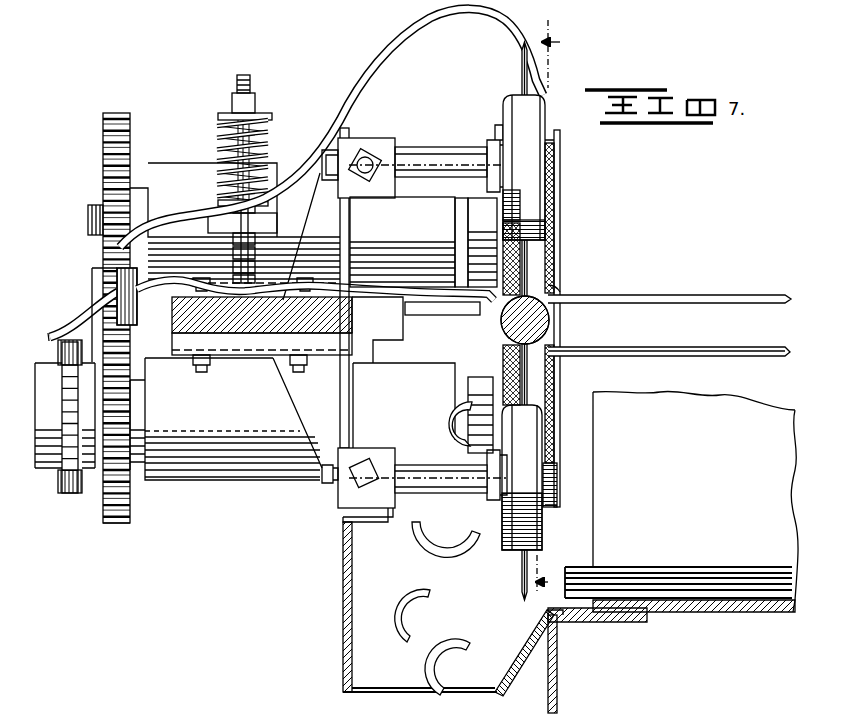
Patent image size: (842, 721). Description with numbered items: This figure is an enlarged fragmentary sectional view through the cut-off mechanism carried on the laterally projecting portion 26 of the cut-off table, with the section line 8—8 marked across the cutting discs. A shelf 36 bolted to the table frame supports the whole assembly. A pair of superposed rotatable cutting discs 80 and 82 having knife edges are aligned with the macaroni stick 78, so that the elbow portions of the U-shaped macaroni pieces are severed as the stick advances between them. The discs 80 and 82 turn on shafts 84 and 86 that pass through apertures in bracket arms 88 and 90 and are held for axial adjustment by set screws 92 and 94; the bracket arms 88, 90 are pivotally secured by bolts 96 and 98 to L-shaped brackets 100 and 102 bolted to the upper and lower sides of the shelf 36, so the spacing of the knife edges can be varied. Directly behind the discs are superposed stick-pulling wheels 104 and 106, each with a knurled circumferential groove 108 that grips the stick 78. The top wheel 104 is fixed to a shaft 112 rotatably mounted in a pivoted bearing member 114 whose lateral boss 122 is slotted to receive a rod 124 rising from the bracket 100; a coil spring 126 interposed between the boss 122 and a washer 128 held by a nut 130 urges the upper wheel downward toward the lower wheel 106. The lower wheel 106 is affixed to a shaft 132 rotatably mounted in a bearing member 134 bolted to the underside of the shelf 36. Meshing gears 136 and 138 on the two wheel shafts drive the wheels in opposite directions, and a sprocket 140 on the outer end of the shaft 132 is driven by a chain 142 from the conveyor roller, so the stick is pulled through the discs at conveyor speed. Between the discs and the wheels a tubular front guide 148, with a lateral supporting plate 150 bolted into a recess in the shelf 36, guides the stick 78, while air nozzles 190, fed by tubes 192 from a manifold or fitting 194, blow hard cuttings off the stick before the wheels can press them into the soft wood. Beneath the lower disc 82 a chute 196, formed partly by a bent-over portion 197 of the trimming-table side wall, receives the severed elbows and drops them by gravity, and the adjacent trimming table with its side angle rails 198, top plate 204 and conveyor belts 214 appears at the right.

The section line 8- 8 is at (551, 316).
The laterally projecting portion 26 is at (240, 507).
The shelf 36 is at (238, 333).
The macaroni stick 78 is at (560, 312).
The cutting disc 80 is at (523, 80).
The cutting disc 82 is at (522, 570).
The shaft 84 is at (427, 150).
The shaft 86 is at (435, 496).
The bracket arm 88 is at (364, 138).
The bracket arm 90 is at (338, 505).
The set screw 92 is at (366, 185).
The set screw 94 is at (333, 487).
The bolt 96 is at (320, 173).
The bolt 98 is at (320, 482).
The L-shaped bracket 100 is at (352, 240).
The L-shaped bracket 102 is at (353, 396).
The top wheel 104 is at (560, 228).
The lower wheel 106 is at (555, 413).
The circumferential groove 108 is at (556, 135).
The shaft 112 is at (468, 203).
The bearing member 114 is at (175, 162).
The lateral boss 122 is at (208, 208).
The rod 124 is at (220, 125).
The coil spring 126 is at (267, 127).
The washer 128 is at (268, 114).
The nut 130 is at (257, 97).
The shaft 132 is at (443, 398).
The bearing member 134 is at (200, 485).
The gear 136 is at (103, 135).
The gear 138 is at (122, 526).
The sprocket 140 is at (53, 470).
The chain 142 is at (363, 53).
The front guide 148 is at (556, 332).
The lateral supporting plate 150 is at (465, 308).
The air nozzles 190 is at (493, 300).
The feed tubes 192 is at (375, 299).
The manifold or fitting 194 is at (92, 282).
The chute 196 is at (343, 620).
The bent-over portion 197 is at (523, 643).
The side angle rails 198 is at (562, 680).
The top plate 204 is at (755, 613).
The belts 214 is at (678, 398).